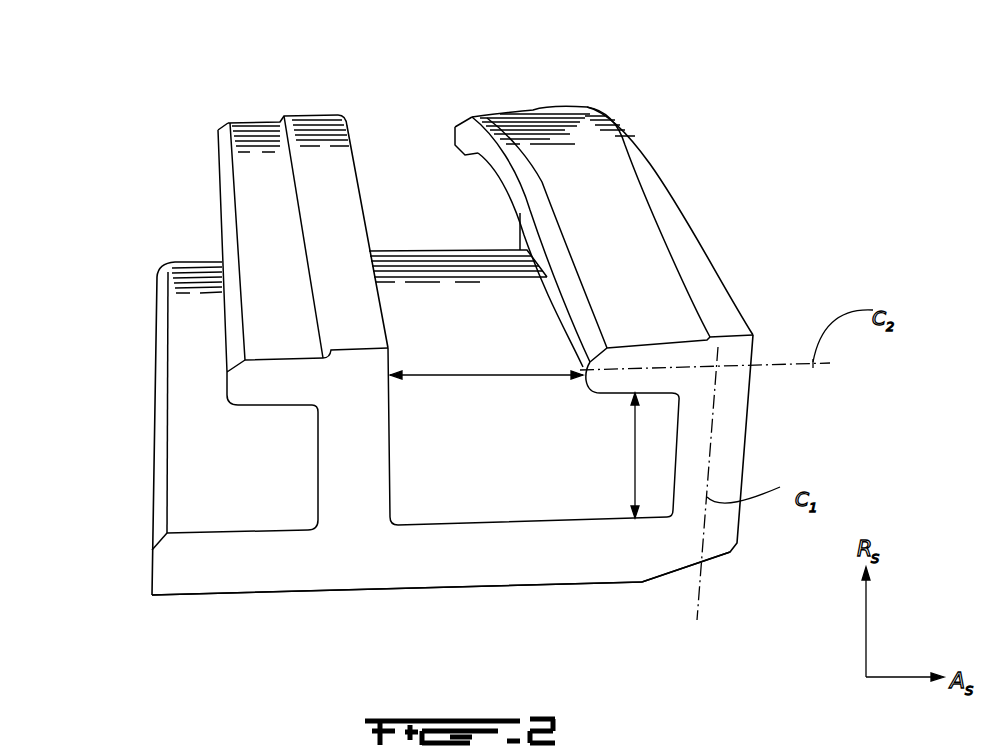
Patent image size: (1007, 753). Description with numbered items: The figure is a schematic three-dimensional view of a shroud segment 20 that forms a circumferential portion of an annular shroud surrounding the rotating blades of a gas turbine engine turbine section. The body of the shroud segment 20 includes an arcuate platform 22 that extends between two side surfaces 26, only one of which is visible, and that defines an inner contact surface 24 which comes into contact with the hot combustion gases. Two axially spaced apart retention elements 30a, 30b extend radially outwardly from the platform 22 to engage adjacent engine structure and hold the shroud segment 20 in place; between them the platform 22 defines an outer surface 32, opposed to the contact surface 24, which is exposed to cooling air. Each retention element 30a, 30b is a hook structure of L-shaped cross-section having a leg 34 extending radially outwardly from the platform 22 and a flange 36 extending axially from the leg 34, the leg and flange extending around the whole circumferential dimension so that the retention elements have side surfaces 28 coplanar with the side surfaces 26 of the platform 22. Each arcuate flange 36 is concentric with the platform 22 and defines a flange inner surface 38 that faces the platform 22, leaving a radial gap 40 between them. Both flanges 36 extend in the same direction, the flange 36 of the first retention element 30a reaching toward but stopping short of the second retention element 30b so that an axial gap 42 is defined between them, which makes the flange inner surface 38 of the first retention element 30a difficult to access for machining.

The shroud segment 20 is at (130, 113).
The arcuate platform 22 is at (588, 553).
The inner contact surface 24 is at (493, 587).
The side surface 26 is at (196, 580).
The side surface 28 is at (350, 452).
The first retention element 30a is at (522, 118).
The second retention element 30b is at (317, 160).
The outer surface 32 is at (530, 307).
The leg 34 is at (735, 426).
The flange 36 is at (652, 360).
The flange inner surface 38 is at (668, 508).
The gap 40 is at (633, 460).
The gap 42 is at (488, 375).